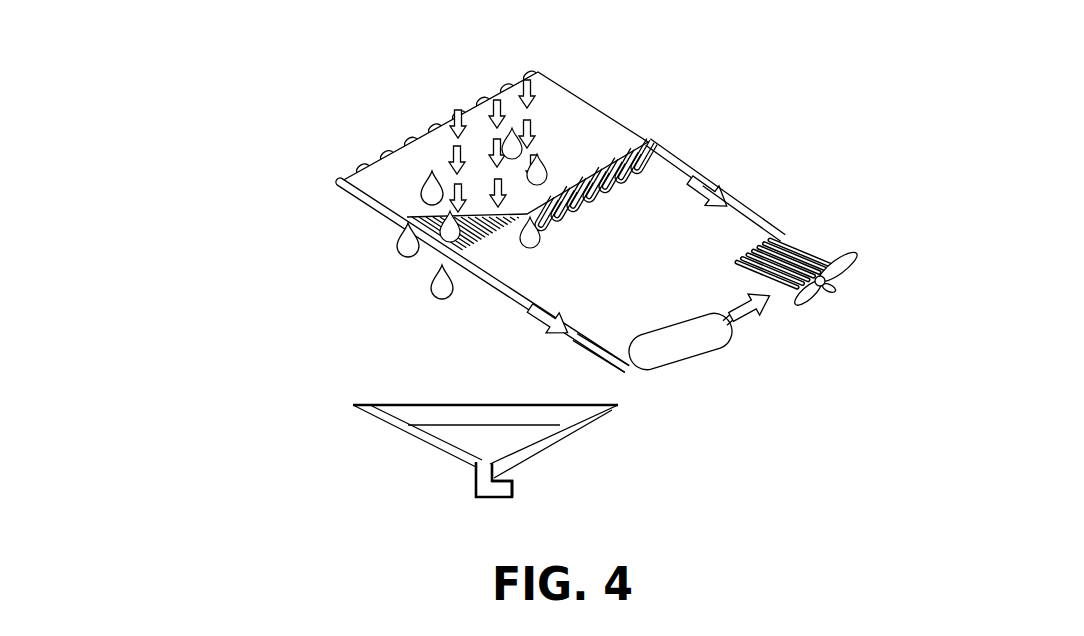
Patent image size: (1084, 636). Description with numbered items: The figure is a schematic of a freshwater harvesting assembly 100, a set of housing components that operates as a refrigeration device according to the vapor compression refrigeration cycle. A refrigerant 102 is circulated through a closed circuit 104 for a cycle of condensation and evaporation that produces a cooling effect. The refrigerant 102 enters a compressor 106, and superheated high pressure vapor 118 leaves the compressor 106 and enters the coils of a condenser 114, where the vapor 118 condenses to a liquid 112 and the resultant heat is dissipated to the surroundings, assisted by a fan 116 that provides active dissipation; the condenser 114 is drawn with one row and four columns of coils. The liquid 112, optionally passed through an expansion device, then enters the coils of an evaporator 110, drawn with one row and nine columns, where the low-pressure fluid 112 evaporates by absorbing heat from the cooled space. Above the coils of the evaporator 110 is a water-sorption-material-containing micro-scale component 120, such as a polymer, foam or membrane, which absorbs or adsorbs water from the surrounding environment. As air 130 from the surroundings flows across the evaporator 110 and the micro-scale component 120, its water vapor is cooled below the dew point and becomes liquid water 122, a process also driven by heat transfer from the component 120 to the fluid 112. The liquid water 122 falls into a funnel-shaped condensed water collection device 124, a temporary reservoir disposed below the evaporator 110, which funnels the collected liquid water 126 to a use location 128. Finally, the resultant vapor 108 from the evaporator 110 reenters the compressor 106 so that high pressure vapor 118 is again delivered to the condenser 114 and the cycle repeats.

The freshwater harvesting assembly 100 is at (752, 78).
The refrigerant 102 is at (723, 318).
The closed circuit 104 is at (750, 207).
The compressor 106 is at (707, 350).
The resultant vapor 108 is at (613, 363).
The evaporator 110 is at (343, 177).
The liquid 112 is at (673, 163).
The condenser 114 is at (810, 247).
The fan 116 is at (860, 257).
The high pressure vapor 118 is at (780, 310).
The water-sorption-material-containing micro-scale component 120 is at (423, 147).
The liquid water 122 is at (433, 278).
The condensed water collection device 124 is at (588, 410).
The collected liquid water 126 is at (487, 445).
The use location 128 is at (513, 485).
The air 130 is at (527, 90).